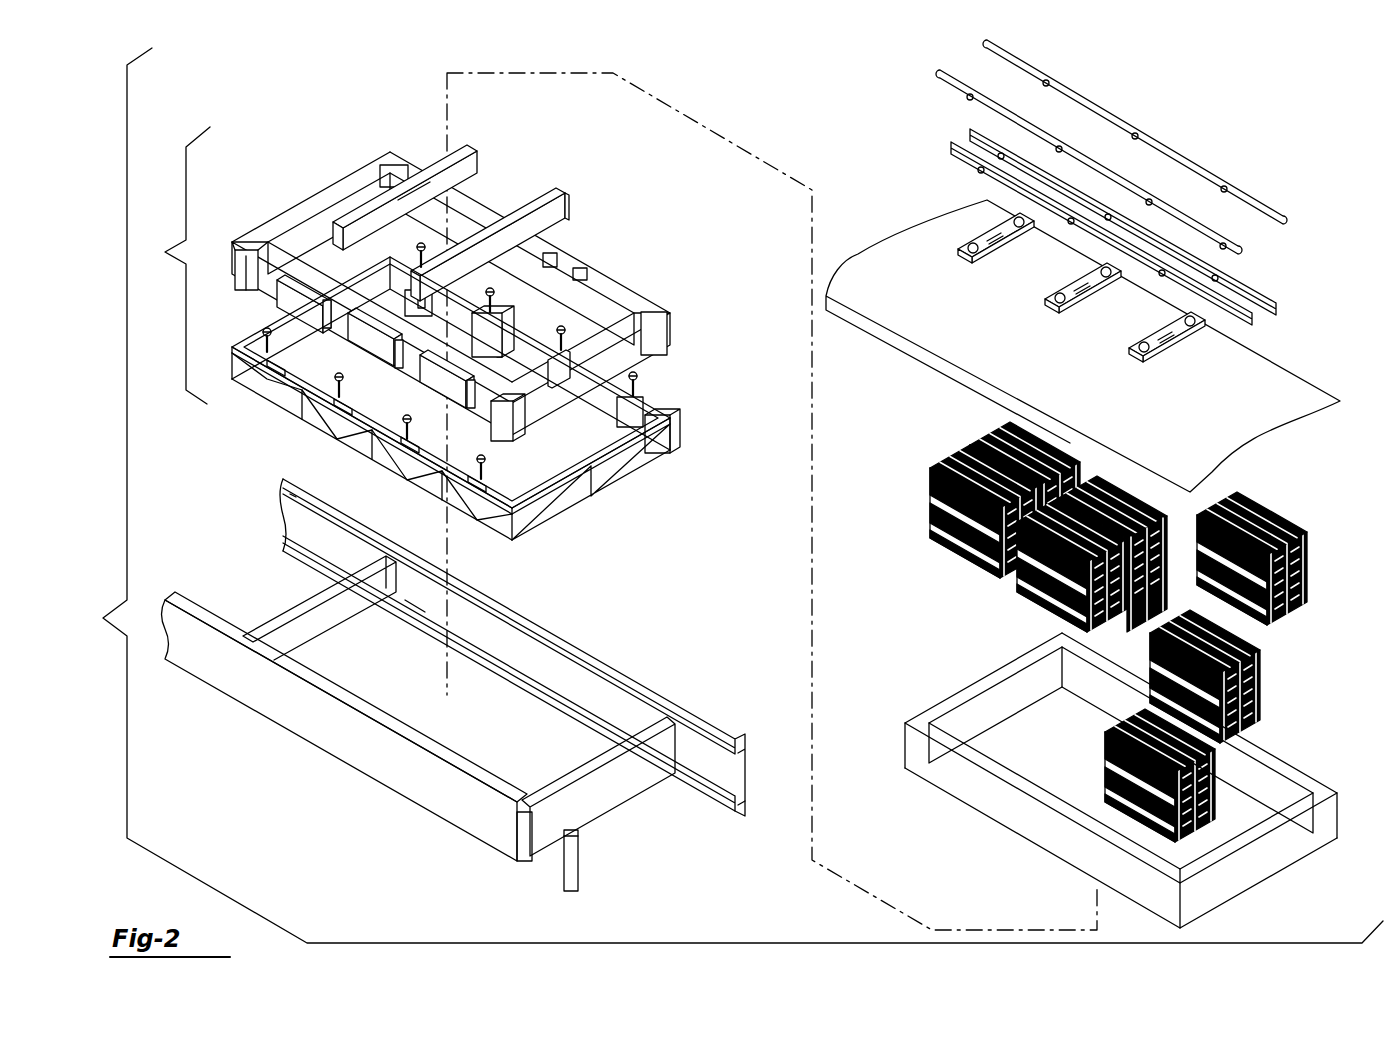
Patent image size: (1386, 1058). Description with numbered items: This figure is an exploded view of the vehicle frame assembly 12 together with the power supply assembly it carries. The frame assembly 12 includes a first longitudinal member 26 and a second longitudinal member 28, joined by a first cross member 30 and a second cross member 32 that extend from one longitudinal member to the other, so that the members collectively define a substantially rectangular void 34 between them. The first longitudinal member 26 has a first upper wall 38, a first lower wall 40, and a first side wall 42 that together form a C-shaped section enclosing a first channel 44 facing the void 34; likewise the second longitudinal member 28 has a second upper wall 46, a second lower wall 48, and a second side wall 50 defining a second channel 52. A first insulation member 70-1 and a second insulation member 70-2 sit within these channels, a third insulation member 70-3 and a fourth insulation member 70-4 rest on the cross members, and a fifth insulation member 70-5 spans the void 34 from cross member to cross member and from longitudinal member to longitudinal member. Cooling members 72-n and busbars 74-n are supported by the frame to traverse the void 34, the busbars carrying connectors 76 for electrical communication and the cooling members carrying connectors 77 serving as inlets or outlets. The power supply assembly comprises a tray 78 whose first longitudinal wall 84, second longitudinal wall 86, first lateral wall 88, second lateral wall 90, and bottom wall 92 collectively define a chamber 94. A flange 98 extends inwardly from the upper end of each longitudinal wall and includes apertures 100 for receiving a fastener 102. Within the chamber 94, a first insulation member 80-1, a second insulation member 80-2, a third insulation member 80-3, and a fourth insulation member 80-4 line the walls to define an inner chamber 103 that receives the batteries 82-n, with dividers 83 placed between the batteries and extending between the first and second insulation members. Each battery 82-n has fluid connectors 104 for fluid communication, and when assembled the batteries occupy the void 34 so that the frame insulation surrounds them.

The frame assembly 12 is at (729, 495).
The first longitudinal member 26 is at (412, 792).
The second longitudinal member 28 is at (290, 482).
The first cross member 30 is at (600, 795).
The second cross member 32 is at (282, 613).
The void 34 is at (348, 684).
The first upper wall 38 is at (400, 737).
The first lower wall 40 is at (578, 881).
The first side wall 42 is at (520, 852).
The first channel 44 is at (594, 862).
The second upper wall 46 is at (535, 634).
The second lower wall 48 is at (416, 614).
The second side wall 50 is at (296, 500).
The second channel 52 is at (275, 522).
The first insulation member 70-1 is at (1015, 800).
The second insulation member 70-2 is at (1281, 760).
The third insulation member 70-3 is at (1262, 853).
The fourth insulation member 70-4 is at (951, 694).
The fifth insulation member 70-5 is at (1227, 437).
The cooling members 72-n is at (1283, 223).
The busbars 74-n is at (1278, 313).
The connectors 76 is at (1064, 222).
The connectors 77 is at (1056, 148).
The tray 78 is at (171, 265).
The first insulation member 80-1 is at (298, 285).
The second insulation member 80-2 is at (662, 322).
The third insulation member 80-3 is at (585, 463).
The fourth insulation member 80-4 is at (284, 214).
The batteries 82-n is at (935, 464).
The dividers 83 is at (395, 203).
The first longitudinal wall 84 is at (448, 503).
The second longitudinal wall 86 is at (512, 350).
The first lateral wall 88 is at (530, 506).
The second lateral wall 90 is at (287, 326).
The bottom wall 92 is at (582, 492).
The chamber 94 is at (380, 300).
The flange 98 is at (496, 328).
The apertures 100 is at (491, 326).
The fastener 102 is at (568, 340).
The chamber 103 is at (443, 240).
The fluid connectors 104 is at (960, 247).